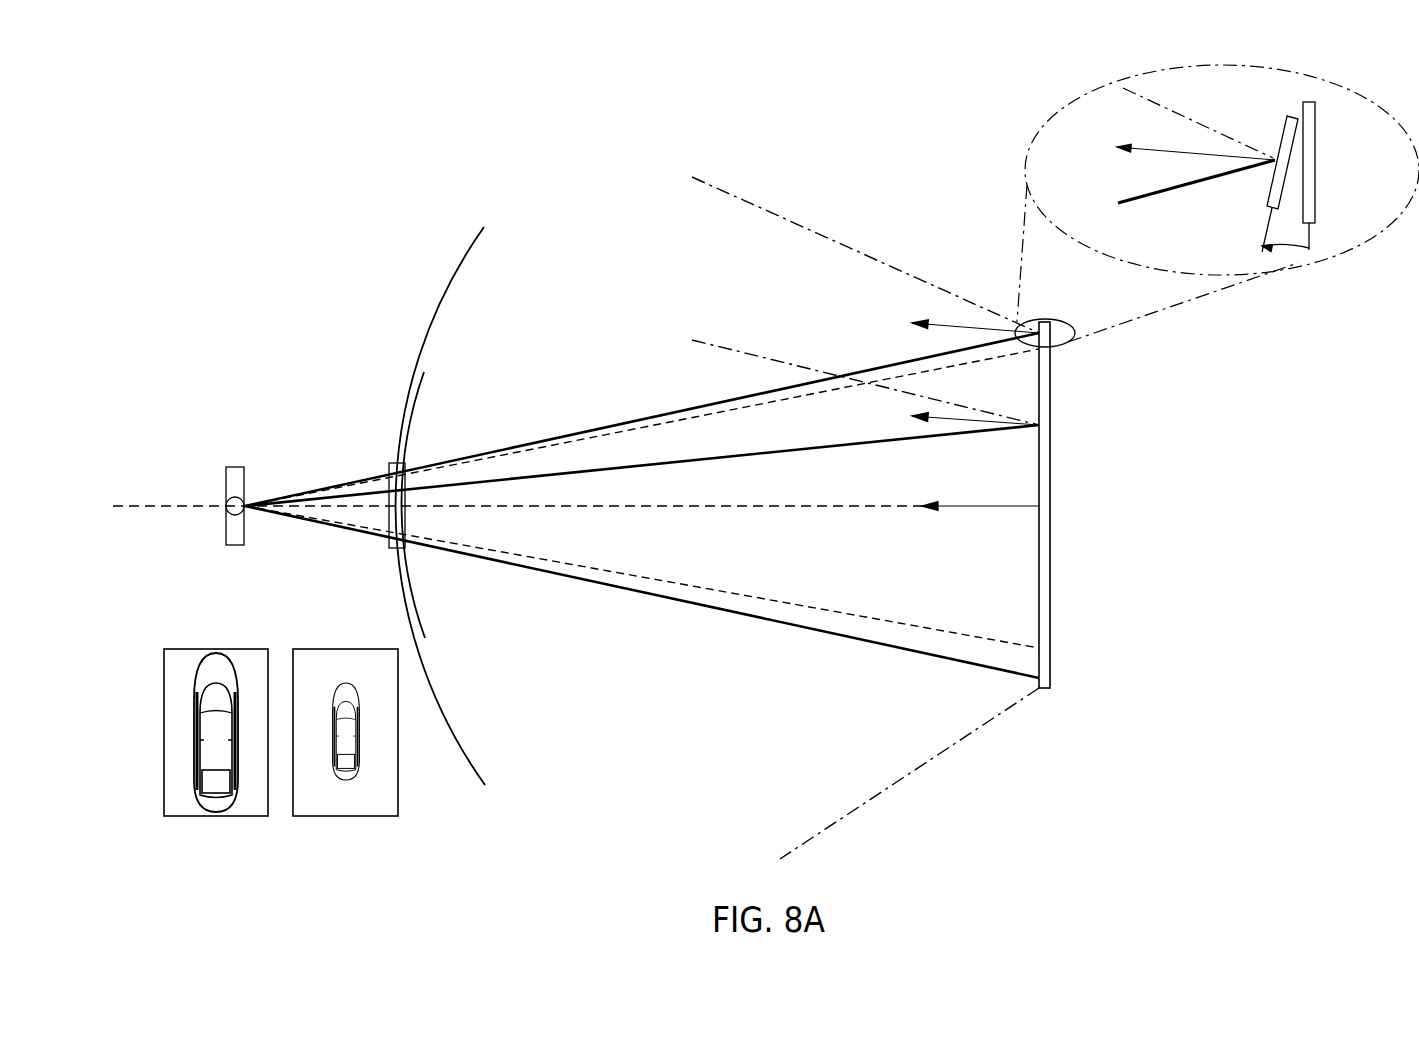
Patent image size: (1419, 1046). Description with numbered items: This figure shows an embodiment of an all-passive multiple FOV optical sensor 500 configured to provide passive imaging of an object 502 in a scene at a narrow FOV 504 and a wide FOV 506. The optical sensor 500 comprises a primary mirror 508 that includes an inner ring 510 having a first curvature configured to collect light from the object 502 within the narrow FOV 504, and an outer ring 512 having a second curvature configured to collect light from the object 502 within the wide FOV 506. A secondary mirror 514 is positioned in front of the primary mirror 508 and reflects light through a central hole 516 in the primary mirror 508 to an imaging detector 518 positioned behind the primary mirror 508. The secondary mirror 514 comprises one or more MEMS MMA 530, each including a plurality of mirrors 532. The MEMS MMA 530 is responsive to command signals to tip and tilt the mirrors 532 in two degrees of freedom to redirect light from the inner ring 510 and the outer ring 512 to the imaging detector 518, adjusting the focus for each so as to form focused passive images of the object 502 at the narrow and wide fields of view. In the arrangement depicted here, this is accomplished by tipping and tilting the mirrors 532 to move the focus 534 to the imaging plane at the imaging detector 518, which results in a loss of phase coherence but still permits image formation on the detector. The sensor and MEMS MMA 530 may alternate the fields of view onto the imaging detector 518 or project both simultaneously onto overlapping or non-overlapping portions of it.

The all-passive multiple FOV optical sensor 500 is at (265, 160).
The object 502 is at (195, 718).
The narrow FOV 504 is at (215, 649).
The wide FOV 506 is at (347, 649).
The primary mirror 508 is at (425, 506).
The inner ring 510 is at (415, 408).
The outer ring 512 is at (458, 272).
The secondary mirror 514 is at (1065, 490).
The central hole 516 is at (405, 520).
The imaging detector 518 is at (235, 467).
The MEMS MMA 530 is at (1316, 160).
The mirrors 532 is at (1295, 115).
The focus 534 is at (228, 510).